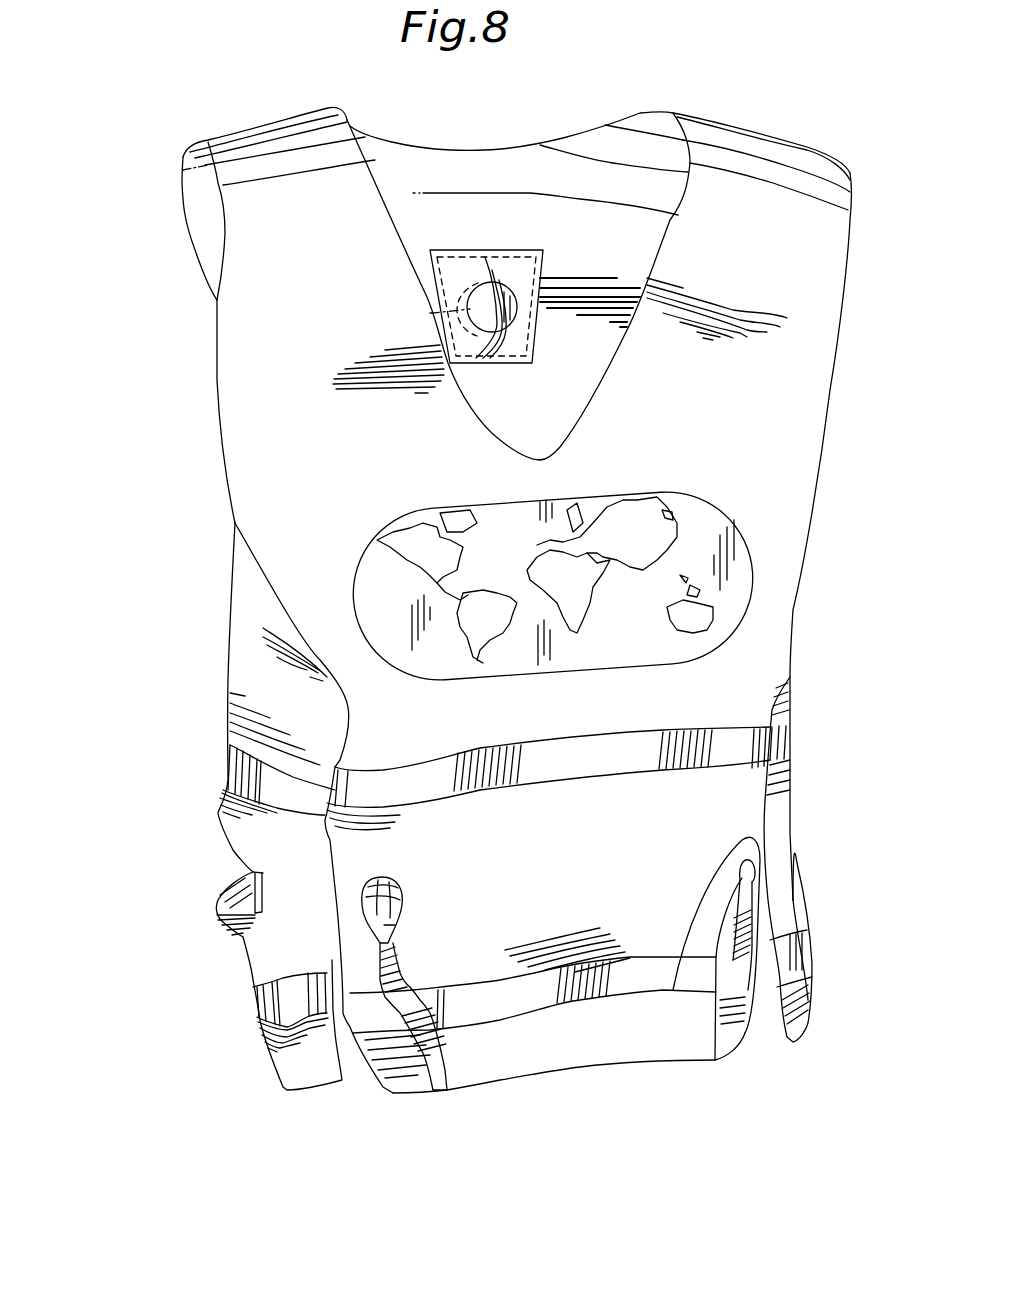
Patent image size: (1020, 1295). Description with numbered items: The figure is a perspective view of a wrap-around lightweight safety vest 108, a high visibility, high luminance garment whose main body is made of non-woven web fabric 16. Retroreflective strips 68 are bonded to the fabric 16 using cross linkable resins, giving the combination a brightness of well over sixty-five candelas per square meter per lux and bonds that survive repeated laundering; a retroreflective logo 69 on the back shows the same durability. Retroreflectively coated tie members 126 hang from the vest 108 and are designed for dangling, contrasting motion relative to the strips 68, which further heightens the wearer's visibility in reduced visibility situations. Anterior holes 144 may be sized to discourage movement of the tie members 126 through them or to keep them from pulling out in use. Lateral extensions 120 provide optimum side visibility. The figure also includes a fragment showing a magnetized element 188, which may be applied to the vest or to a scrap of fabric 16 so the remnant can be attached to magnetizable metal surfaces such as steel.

The fabric 16 is at (253, 398).
The vest 108 is at (200, 250).
The magnetized element 188 is at (430, 313).
The retroreflective logo 69 is at (750, 550).
The retroreflective strips 68 is at (793, 727).
The lateral extensions 120 is at (220, 887).
The anterior holes 144 is at (673, 990).
The tie members 126 is at (723, 1040).